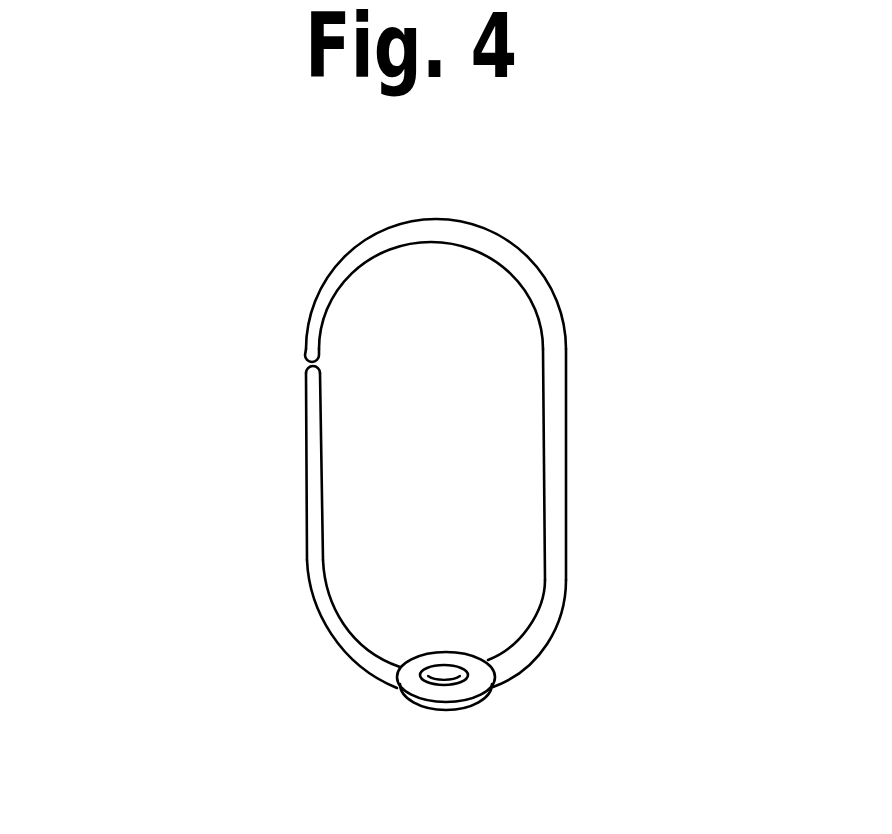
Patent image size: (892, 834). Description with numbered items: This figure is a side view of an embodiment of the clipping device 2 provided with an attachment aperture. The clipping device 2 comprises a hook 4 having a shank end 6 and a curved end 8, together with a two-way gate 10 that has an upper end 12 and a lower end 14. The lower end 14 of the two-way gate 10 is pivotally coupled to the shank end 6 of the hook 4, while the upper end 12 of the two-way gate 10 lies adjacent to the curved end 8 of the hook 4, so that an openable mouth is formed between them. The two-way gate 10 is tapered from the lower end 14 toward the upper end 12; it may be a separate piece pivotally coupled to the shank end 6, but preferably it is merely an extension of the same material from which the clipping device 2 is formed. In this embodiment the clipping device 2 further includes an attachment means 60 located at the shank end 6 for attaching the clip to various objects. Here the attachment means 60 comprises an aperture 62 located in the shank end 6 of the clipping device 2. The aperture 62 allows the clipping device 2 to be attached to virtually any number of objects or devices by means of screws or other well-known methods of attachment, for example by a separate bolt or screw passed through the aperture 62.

The clipping device 2 is at (555, 282).
The hook 4 is at (575, 442).
The shank end 6 is at (556, 646).
The curved end 8 is at (303, 303).
The two-way gate 10 is at (298, 485).
The upper end 12 is at (290, 371).
The lower end 14 is at (305, 589).
The attachment means 60 is at (445, 680).
The aperture 62 is at (482, 710).